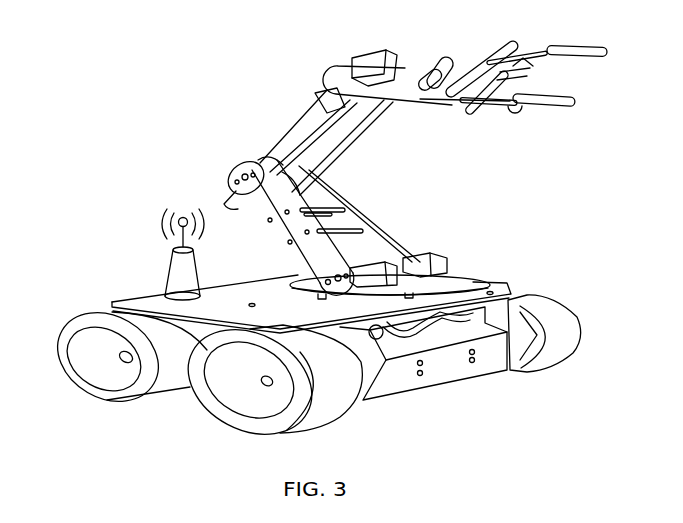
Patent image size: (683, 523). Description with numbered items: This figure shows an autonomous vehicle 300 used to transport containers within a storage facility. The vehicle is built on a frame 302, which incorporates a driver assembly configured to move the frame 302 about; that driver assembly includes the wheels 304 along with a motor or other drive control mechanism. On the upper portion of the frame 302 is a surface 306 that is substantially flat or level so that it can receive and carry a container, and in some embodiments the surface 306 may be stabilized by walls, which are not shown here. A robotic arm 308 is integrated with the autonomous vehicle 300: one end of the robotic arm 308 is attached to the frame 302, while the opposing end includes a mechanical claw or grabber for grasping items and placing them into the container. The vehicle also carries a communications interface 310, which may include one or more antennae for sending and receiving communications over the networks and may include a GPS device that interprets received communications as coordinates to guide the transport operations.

The autonomous vehicle 300 is at (68, 30).
The frame 302 is at (576, 283).
The wheels 304 is at (60, 357).
The surface 306 is at (250, 298).
The robotic arm 308 is at (373, 61).
The communications interface 310 is at (169, 274).